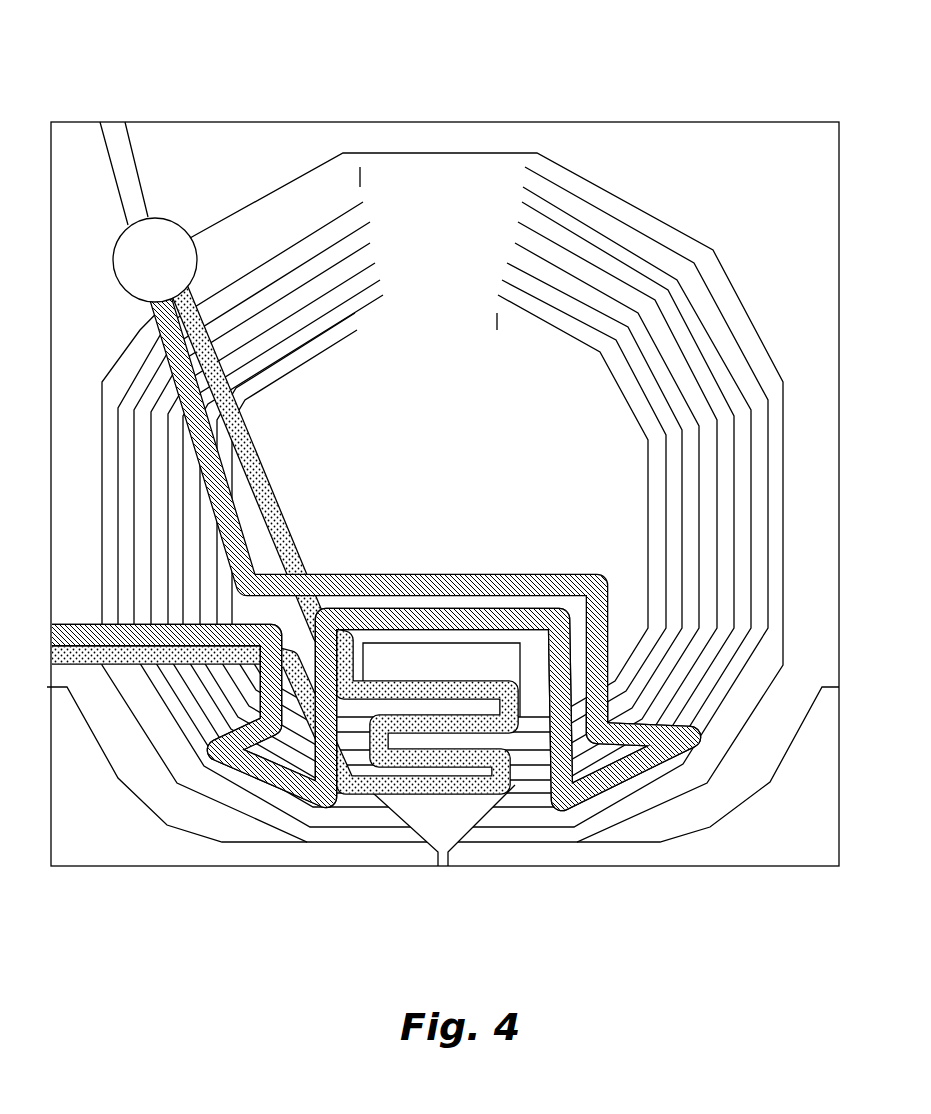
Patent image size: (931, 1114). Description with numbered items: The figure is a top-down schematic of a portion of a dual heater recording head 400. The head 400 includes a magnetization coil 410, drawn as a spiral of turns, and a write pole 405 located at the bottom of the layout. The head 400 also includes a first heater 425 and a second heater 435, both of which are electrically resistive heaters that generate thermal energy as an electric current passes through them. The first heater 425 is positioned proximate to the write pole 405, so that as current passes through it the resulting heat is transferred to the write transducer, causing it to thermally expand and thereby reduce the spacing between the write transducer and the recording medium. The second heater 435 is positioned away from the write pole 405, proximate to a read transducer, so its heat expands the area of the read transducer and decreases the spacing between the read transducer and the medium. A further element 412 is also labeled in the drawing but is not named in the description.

The dual heater recording head 400 is at (329, 110).
The write pole 405 is at (447, 830).
The magnetization coil 410 is at (478, 177).
The hatched connection trace 412 is at (260, 473).
The first heater 425 is at (423, 683).
The second heater 435 is at (650, 785).